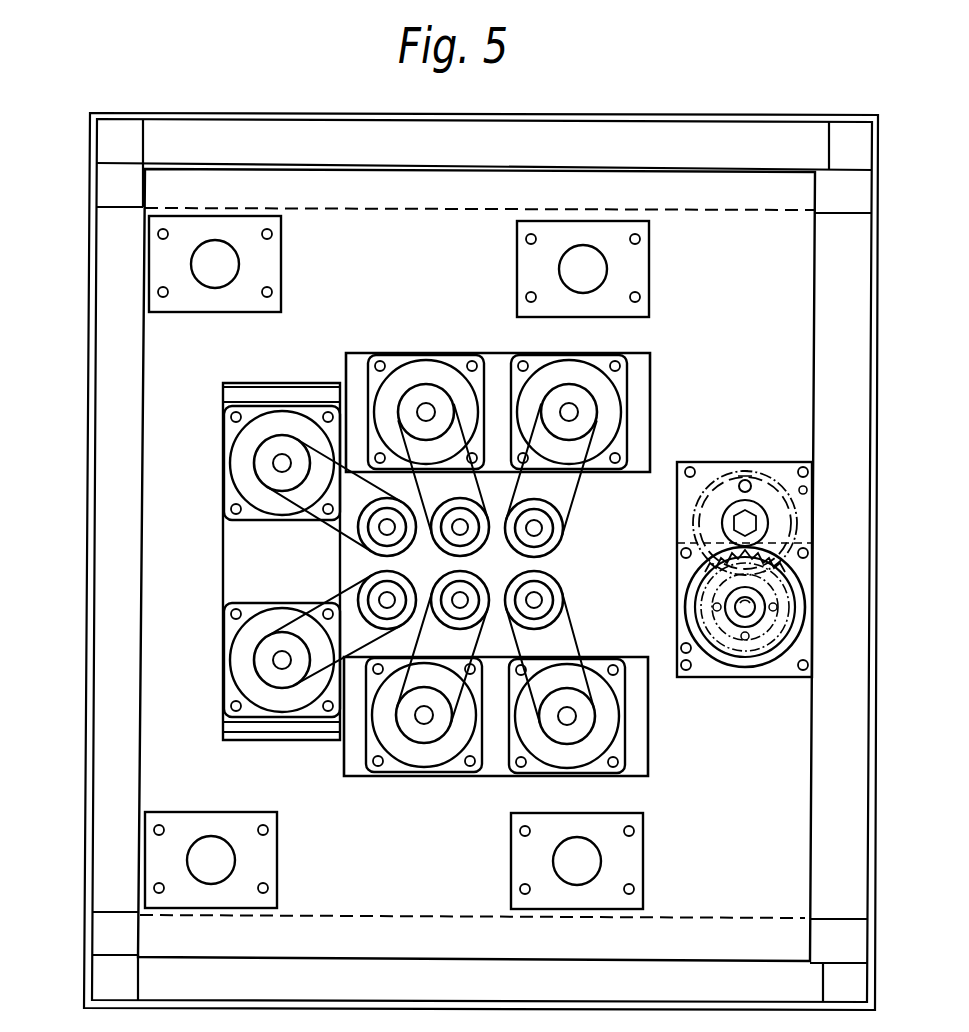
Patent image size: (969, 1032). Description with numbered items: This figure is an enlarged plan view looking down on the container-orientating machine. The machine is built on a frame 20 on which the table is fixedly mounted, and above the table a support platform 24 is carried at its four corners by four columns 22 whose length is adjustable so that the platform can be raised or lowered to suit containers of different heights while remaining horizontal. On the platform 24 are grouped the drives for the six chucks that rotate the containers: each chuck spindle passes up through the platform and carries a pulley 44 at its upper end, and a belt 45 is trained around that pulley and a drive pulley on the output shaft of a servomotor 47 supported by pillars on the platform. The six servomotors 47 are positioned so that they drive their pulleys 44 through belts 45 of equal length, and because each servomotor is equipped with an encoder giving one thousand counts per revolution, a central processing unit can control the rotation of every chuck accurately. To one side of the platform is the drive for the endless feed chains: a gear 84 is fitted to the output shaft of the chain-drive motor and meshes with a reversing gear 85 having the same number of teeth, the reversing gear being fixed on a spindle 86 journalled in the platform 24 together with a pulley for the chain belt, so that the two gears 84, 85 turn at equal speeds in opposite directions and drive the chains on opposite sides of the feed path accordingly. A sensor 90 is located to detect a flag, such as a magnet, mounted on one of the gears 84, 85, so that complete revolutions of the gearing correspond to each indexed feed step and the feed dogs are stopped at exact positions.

The frame 20 is at (163, 362).
The columns 22 is at (225, 270).
The support platform 24 is at (476, 565).
The pulley 44 is at (553, 588).
The belt 45 is at (575, 498).
The servomotor 47 is at (545, 382).
The gear 84 is at (765, 628).
The reversing gear 85 is at (772, 492).
The spindle 86 is at (730, 515).
The sensor 90 is at (744, 472).